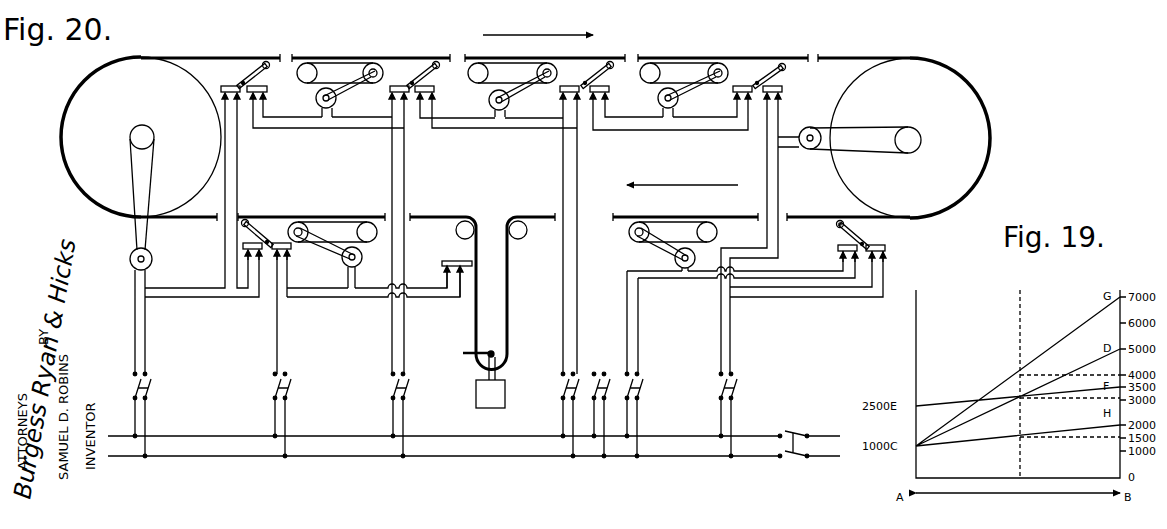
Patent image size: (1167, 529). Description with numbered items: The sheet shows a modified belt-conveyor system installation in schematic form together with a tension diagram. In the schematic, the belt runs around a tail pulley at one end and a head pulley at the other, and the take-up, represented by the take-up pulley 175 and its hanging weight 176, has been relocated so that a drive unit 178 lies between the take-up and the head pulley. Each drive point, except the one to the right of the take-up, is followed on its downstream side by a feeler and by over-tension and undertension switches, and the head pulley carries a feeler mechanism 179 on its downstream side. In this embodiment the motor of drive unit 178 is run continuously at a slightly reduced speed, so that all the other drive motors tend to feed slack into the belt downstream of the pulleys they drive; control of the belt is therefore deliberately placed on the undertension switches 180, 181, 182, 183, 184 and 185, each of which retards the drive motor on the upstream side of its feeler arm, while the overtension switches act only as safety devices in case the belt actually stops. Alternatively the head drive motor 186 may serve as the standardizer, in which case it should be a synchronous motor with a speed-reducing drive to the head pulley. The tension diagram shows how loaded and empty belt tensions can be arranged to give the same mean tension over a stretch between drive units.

The take-up pulley 175 is at (503, 351).
The weight 176 is at (504, 396).
The drive unit 178 is at (682, 234).
The feeler mechanism 179 is at (836, 229).
The undertension switch 180 is at (235, 80).
The undertension switch 181 is at (400, 86).
The undertension switch 182 is at (576, 76).
The undertension switch 183 is at (746, 78).
The undertension switch 184 is at (893, 242).
The undertension switch 185 is at (275, 241).
The head drive motor 186 is at (811, 127).